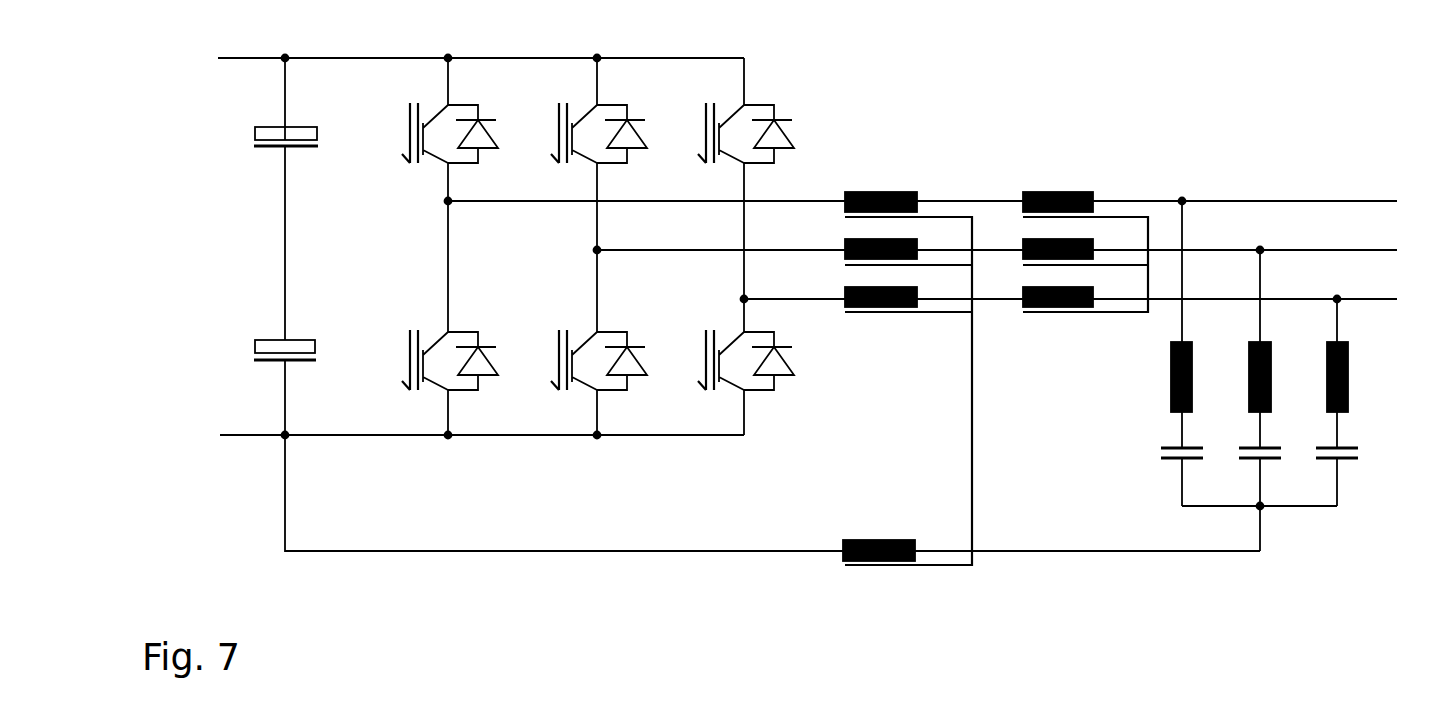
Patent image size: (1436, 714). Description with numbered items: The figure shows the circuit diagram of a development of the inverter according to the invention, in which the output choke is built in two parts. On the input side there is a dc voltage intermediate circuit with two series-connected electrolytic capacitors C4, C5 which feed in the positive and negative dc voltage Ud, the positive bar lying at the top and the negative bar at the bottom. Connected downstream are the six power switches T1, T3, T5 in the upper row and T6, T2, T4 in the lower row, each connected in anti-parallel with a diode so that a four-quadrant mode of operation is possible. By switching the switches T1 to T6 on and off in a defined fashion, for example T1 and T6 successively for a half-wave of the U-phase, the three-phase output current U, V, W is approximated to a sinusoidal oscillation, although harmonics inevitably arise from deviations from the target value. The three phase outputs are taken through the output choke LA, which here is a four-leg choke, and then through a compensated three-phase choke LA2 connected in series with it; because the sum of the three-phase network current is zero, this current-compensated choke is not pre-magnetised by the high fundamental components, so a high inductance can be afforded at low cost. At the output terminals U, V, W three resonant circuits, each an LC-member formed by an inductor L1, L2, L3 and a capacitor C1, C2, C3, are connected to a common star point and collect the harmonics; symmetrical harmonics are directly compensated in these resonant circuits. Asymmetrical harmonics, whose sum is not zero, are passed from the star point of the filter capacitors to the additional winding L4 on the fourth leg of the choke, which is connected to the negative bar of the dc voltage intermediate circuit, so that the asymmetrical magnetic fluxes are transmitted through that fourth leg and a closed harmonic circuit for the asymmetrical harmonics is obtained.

The power switch T1 is at (450, 114).
The power switch T2 is at (599, 359).
The power switch T3 is at (599, 139).
The power switch T4 is at (746, 383).
The power switch T5 is at (746, 163).
The power switch T6 is at (450, 334).
The electrolytic capacitor C4 is at (267, 135).
The electrolytic capacitor C5 is at (265, 351).
The filter capacitor C1 is at (1182, 494).
The filter capacitor C2 is at (1265, 499).
The filter capacitor C3 is at (1337, 494).
The inductor L1 is at (1030, 309).
The inductor L2 is at (1071, 335).
The inductor L3 is at (1109, 359).
The additional winding L4 is at (896, 541).
The output choke LA is at (908, 362).
The compensated three-phase choke LA2 is at (1085, 235).
The three-phase output current phase U is at (936, 205).
The three-phase output current phase V is at (1010, 254).
The three-phase output current phase W is at (1087, 303).
The dc voltage Ud is at (706, 298).